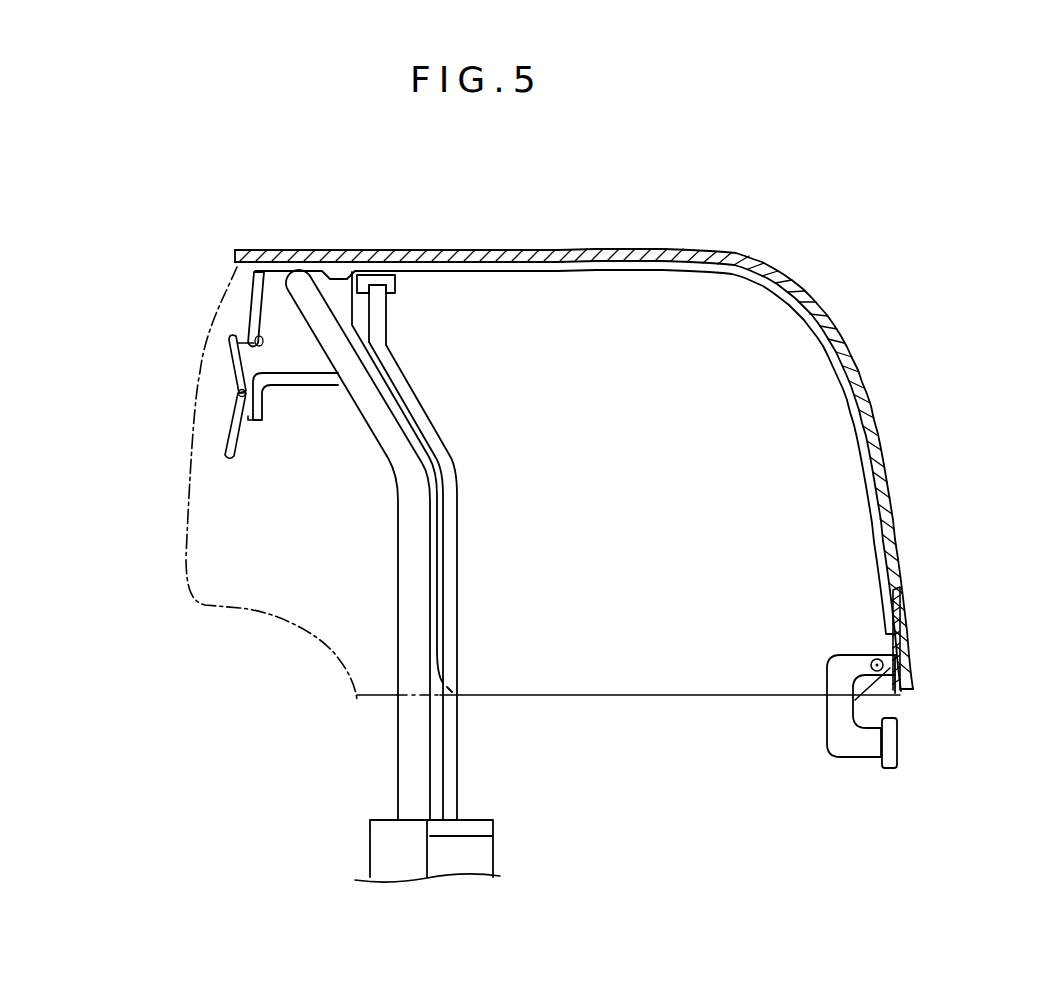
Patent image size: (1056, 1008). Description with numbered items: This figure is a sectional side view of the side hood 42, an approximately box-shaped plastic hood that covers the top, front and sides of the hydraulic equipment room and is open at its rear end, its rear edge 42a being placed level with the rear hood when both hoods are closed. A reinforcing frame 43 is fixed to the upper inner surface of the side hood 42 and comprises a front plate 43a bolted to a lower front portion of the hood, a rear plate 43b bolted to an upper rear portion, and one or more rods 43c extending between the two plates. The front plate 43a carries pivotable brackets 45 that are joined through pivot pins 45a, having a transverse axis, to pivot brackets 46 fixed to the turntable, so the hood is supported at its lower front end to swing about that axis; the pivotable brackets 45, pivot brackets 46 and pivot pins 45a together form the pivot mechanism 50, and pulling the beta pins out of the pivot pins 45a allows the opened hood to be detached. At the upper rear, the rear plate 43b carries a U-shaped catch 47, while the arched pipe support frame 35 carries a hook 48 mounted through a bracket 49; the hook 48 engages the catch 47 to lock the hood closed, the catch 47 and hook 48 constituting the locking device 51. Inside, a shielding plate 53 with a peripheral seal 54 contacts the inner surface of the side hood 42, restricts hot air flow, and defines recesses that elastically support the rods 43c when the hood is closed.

The support frame 35 is at (394, 452).
The side hood 42 is at (790, 282).
The rear edge 42a is at (197, 387).
The reinforcing frame 43 is at (655, 435).
The front plate 43a is at (910, 645).
The rear plate 43b is at (330, 264).
The rods 43c is at (885, 535).
The pivotable brackets 45 is at (808, 677).
The pivot pins 45a is at (877, 660).
The pivot brackets 46 is at (833, 738).
The catch 47 is at (250, 287).
The hook 48 is at (232, 352).
The bracket 49 is at (305, 388).
The pivot mechanism 50 is at (784, 701).
The locking device 51 is at (164, 351).
The shielding plate 53 is at (414, 398).
The seal 54 is at (394, 280).